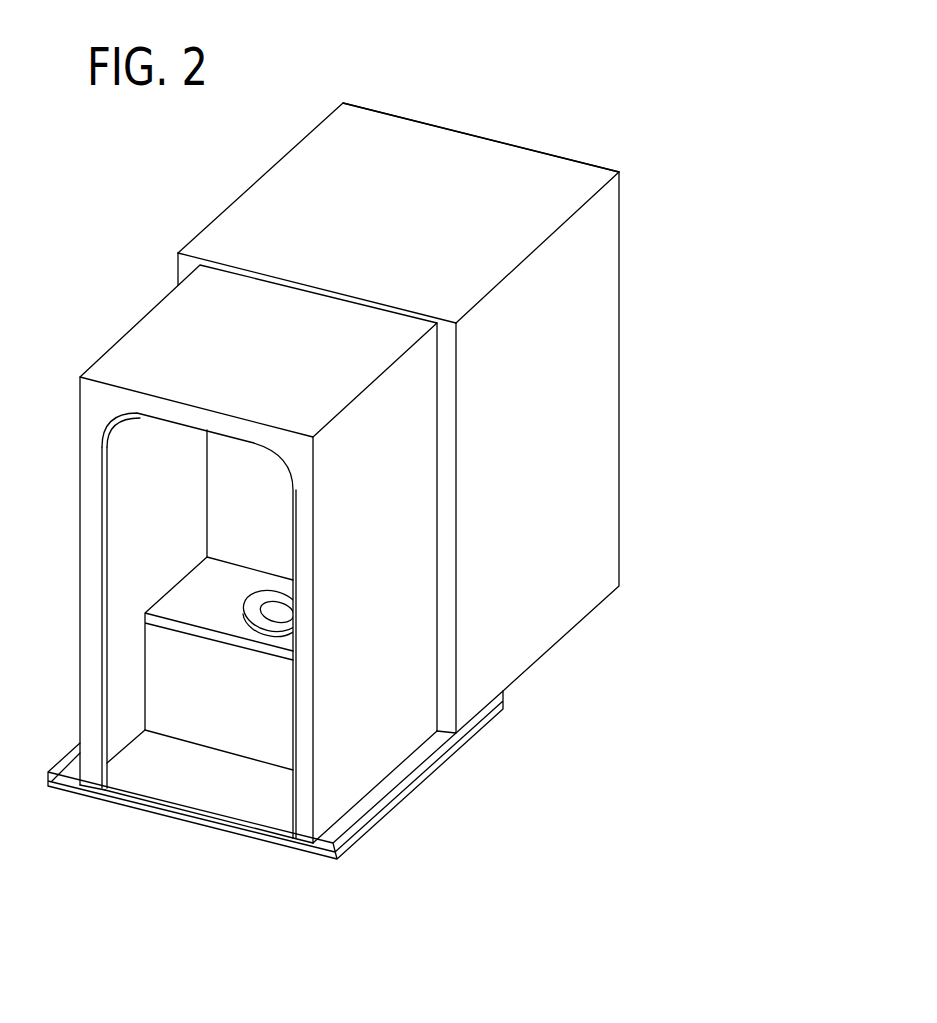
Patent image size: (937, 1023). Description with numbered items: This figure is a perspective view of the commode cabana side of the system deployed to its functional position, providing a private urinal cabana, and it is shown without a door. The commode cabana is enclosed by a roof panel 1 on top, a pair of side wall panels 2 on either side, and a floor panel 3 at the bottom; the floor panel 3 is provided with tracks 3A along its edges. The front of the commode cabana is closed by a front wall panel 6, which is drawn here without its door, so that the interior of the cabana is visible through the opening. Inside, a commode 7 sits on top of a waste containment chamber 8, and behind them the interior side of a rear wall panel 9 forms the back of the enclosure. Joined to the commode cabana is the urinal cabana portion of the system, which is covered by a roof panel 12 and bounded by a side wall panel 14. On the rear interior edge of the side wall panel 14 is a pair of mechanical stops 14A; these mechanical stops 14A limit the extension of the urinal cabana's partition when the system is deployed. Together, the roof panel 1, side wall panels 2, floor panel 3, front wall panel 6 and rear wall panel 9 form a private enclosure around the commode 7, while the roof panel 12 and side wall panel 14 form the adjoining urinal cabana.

The roof panel of the commode cabana 1 is at (258, 554).
The side wall panels of the commode cabana 2 is at (269, 645).
The floor panel of the commode cabana 3 is at (199, 784).
The tracks 3A is at (70, 777).
The front wall panel of the commode cabana 6 is at (196, 620).
The commode 7 is at (280, 612).
The waste containment chamber 8 is at (219, 663).
The rear wall panel of the commode cabana 9 is at (236, 493).
The roof panel of the urinal cabana 12 is at (398, 213).
The side wall panel of the urinal cabana 14 is at (398, 397).
The mechanical stops 14A is at (187, 270).